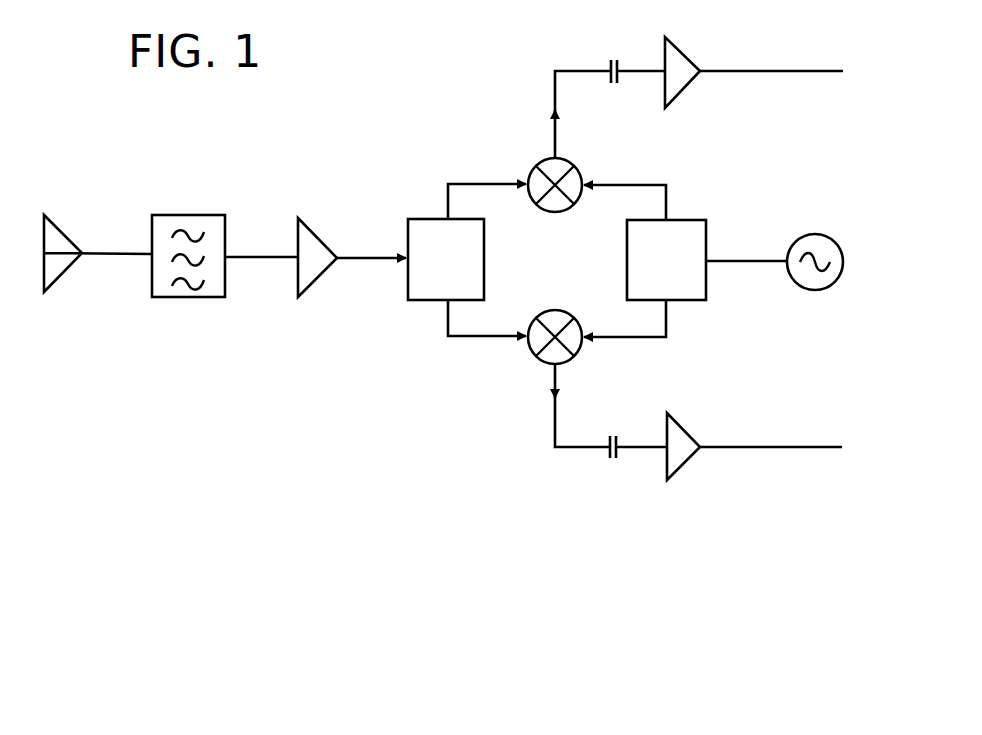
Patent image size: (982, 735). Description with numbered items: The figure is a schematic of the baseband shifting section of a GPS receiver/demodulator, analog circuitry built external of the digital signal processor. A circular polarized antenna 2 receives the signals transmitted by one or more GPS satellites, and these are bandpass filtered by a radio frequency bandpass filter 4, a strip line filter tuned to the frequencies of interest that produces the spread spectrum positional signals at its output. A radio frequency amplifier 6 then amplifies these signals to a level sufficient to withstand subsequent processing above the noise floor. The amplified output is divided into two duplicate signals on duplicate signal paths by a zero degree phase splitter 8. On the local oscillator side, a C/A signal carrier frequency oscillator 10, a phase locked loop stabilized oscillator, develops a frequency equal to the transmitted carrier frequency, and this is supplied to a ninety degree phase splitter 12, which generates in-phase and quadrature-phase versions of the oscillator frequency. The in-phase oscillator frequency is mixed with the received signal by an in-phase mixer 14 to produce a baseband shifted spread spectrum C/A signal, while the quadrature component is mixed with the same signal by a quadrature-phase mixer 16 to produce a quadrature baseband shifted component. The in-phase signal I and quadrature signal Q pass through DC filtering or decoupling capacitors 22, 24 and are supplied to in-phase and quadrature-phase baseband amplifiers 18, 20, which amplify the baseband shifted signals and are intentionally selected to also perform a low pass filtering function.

The circular polarized antenna 2 is at (68, 268).
The radio frequency bandpass filter 4 is at (226, 280).
The radio frequency amplifier 6 is at (322, 275).
The 0° phase splitter 8 is at (425, 303).
The C/A signal carrier frequency oscillator 10 is at (836, 241).
The 90° phase splitter 12 is at (708, 305).
The in-phase mixer 14 is at (540, 165).
The quadrature-phase mixer 16 is at (537, 362).
The in-phase baseband amplifier 18 is at (700, 58).
The quadrature-phase baseband amplifier 20 is at (688, 460).
The DC decoupling capacitor 22 is at (617, 82).
The DC decoupling capacitor 24 is at (607, 452).